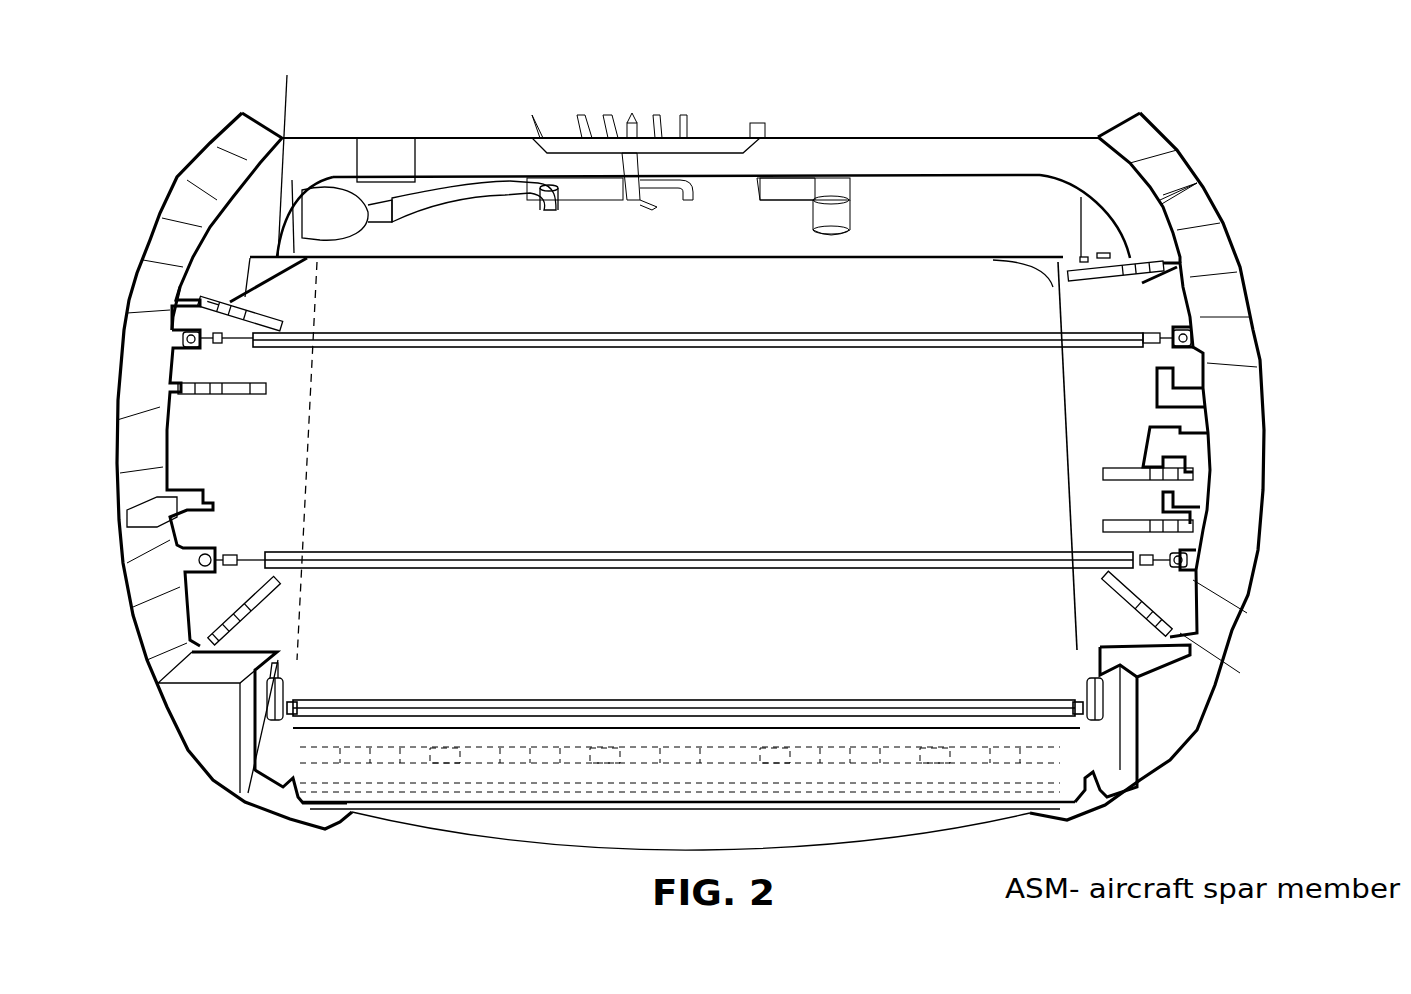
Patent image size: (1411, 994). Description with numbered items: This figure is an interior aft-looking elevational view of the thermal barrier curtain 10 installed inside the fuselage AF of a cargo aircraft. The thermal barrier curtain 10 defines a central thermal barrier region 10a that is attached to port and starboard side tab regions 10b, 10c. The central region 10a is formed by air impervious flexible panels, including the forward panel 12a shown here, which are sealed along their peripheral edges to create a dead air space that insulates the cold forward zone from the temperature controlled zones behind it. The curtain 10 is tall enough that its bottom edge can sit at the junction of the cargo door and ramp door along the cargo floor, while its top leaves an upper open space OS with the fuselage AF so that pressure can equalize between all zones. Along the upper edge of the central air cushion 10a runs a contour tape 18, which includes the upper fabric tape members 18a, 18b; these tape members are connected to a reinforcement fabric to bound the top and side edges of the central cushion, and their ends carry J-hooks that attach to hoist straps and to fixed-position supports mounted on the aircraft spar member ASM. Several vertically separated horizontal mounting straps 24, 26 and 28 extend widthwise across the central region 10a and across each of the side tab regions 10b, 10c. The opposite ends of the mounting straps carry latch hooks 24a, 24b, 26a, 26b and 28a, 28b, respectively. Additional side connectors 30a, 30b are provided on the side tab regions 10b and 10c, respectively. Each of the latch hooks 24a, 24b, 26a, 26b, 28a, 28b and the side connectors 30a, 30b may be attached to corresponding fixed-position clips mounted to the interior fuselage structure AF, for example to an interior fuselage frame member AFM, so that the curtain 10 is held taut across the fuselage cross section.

The thermal barrier curtain 10 is at (881, 258).
The central thermal barrier region 10a is at (722, 455).
The port side tab region 10b is at (1127, 425).
The starboard side tab region 10c is at (272, 454).
The forward panel 12a is at (428, 272).
The contour tape 18 is at (577, 257).
The upper fabric tape member 18a is at (1067, 257).
The upper fabric tape member 18b is at (281, 151).
The horizontal mounting strap 24 is at (672, 705).
The latch hook 24a is at (1085, 705).
The latch hook 24b is at (297, 703).
The horizontal mounting strap 26 is at (829, 548).
The latch hook 26a is at (1190, 563).
The latch hook 26b is at (214, 552).
The horizontal mounting strap 28 is at (789, 335).
The latch hook 28a is at (1195, 330).
The latch hook 28b is at (183, 337).
The side connector 30a is at (1165, 265).
The side connector 30b is at (200, 300).
The fuselage AF is at (1243, 383).
The interior fuselage frame member AFM is at (240, 207).
The aircraft spar member ASM is at (277, 685).
The upper open space OS is at (692, 248).